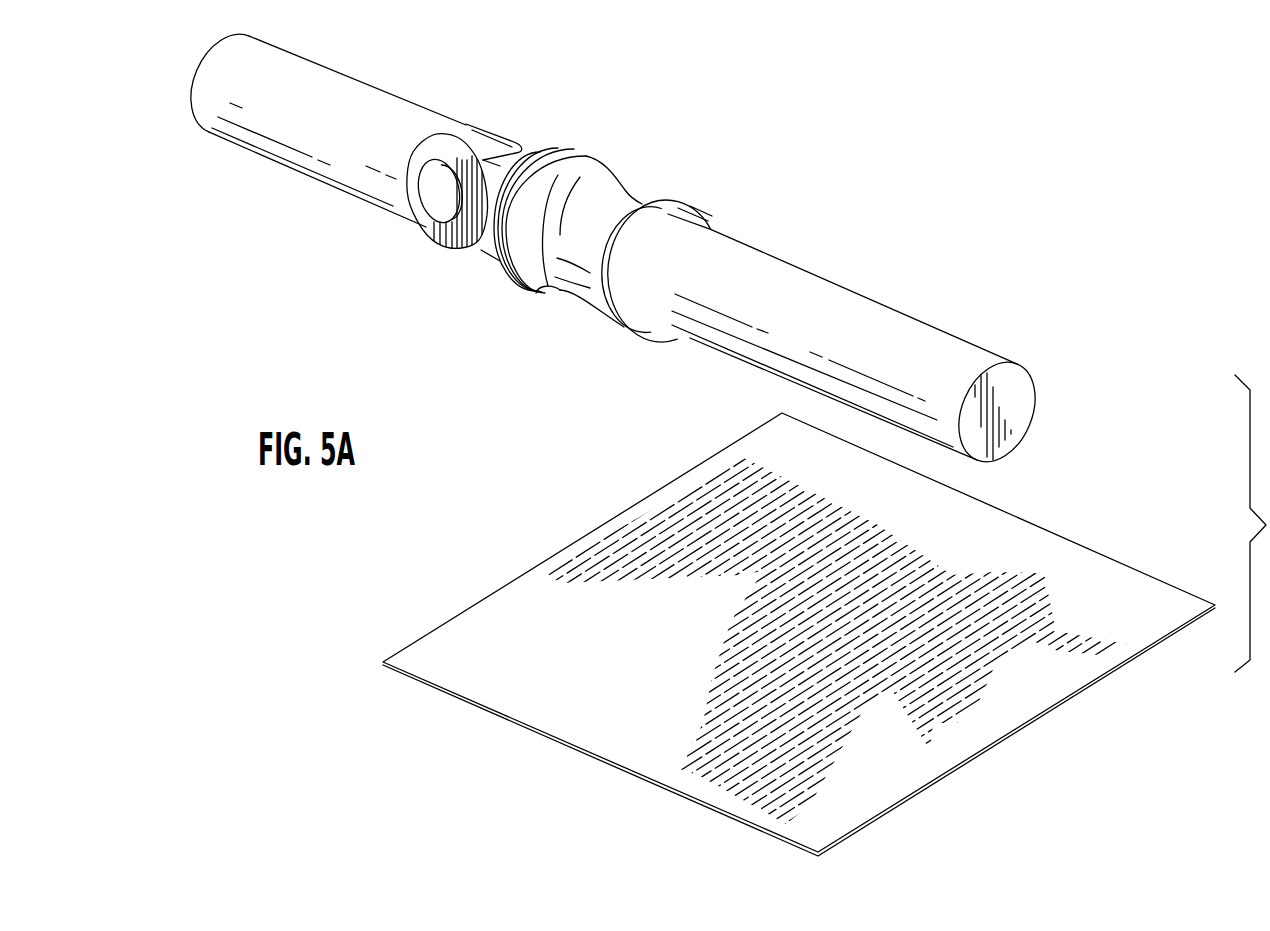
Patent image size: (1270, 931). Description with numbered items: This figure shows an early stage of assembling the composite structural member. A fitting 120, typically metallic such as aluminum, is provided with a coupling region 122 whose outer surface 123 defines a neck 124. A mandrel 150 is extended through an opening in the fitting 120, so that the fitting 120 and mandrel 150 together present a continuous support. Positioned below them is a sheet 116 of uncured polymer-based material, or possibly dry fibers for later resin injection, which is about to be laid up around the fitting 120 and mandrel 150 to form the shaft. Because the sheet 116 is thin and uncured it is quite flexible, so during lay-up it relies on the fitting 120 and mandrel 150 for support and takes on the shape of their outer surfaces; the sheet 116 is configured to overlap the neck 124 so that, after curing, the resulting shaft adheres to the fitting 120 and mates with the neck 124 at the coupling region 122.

The mandrel 150 is at (326, 68).
The fitting 120 is at (488, 110).
The coupling region 122 is at (627, 185).
The outer surface 123 is at (536, 294).
The neck 124 is at (585, 300).
The sheet 116 is at (1102, 554).